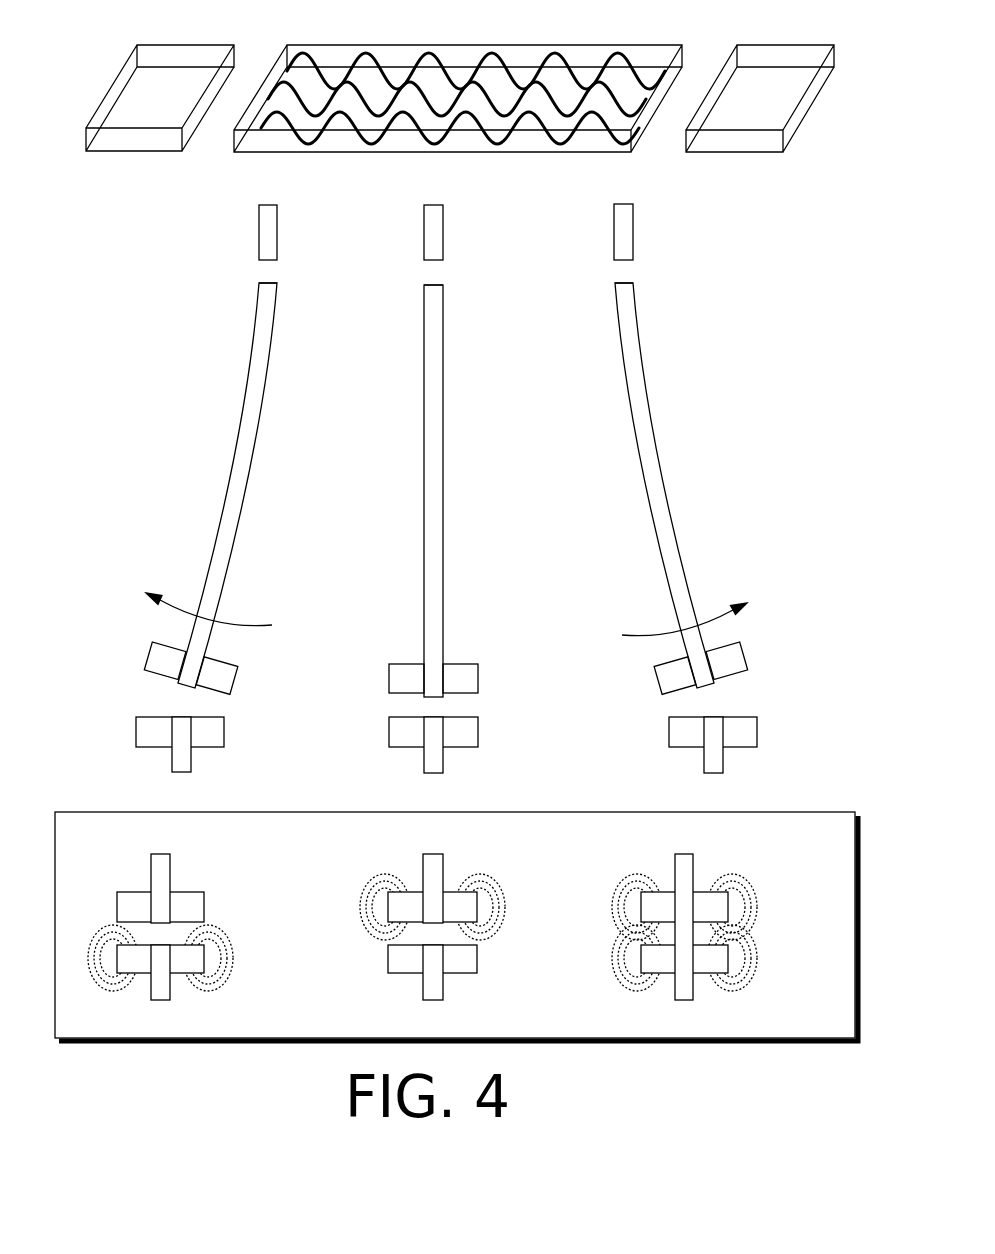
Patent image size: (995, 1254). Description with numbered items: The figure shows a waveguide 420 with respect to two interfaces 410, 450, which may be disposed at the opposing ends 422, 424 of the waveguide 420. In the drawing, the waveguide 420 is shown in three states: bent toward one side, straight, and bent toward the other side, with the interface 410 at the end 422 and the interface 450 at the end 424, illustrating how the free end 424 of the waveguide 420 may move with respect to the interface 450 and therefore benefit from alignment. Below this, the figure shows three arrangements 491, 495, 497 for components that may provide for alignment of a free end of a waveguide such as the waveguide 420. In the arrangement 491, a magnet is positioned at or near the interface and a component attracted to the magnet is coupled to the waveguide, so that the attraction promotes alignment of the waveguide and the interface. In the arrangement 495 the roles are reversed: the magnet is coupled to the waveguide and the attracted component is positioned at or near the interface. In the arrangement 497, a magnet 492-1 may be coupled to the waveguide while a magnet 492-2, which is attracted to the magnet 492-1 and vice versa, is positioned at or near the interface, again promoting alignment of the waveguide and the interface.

The interface 410 is at (205, 26).
The waveguide 420 is at (531, 25).
The end of the waveguide 422 is at (259, 283).
The end of the waveguide 424 is at (175, 687).
The interface 450 is at (804, 30).
The arrangement 491 is at (110, 848).
The arrangement 495 is at (364, 848).
The arrangement 497 is at (636, 848).
The magnet 492-1 is at (712, 907).
The magnet 492-2 is at (717, 960).